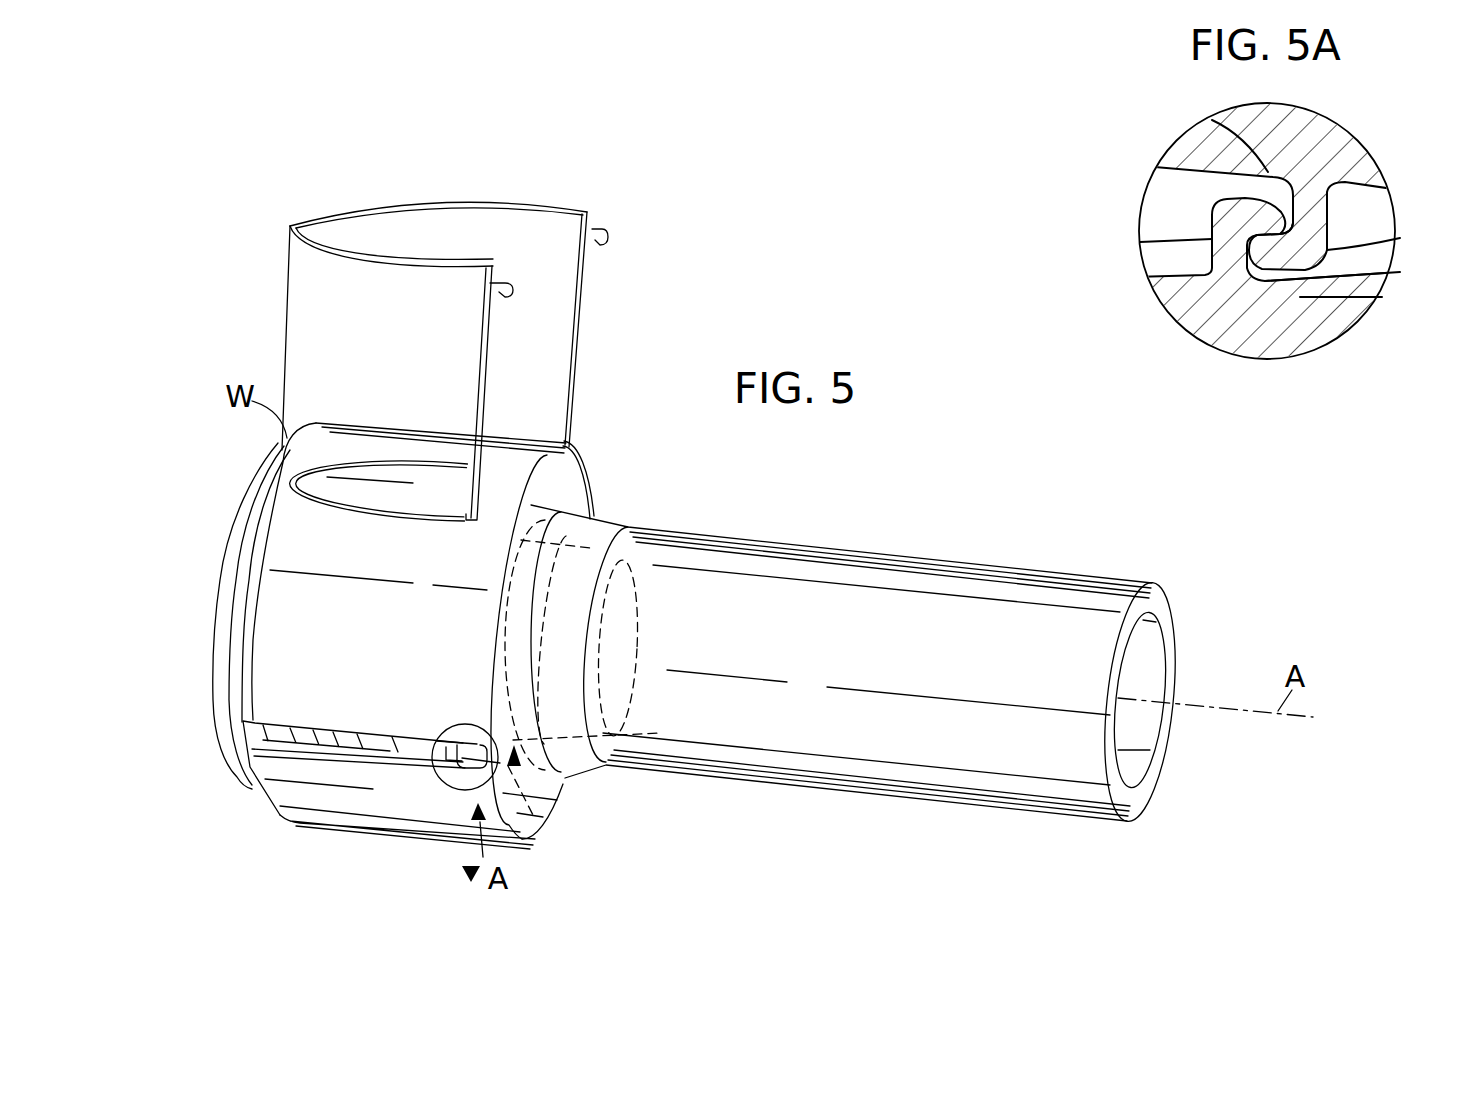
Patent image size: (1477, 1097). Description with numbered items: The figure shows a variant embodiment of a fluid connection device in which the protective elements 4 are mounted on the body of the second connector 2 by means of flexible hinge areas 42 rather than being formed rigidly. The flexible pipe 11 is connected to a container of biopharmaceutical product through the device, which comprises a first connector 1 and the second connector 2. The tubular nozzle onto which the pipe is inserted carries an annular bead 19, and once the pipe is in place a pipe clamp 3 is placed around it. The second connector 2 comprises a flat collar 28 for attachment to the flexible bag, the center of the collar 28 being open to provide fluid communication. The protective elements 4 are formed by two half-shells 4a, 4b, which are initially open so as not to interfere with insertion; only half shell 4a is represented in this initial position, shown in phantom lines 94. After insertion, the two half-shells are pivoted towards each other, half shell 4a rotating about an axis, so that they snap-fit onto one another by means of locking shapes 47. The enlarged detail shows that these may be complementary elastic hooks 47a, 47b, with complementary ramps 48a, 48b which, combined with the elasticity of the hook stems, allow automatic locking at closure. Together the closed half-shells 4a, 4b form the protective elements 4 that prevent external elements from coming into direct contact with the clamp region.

In FIG. 5, the first connector 1 is at (537, 817).
In FIG. 5, the second connector 2 is at (193, 595).
In FIG. 5, the pipe clamp 3 is at (412, 748).
In FIG. 5, the protective elements 4 is at (604, 461).
In FIG. 5, the half shell 4a is at (383, 416).
In FIG. 5A, the half shell 4a is at (1340, 148).
In FIG. 5, the half shell 4b is at (323, 835).
In FIG. 5A, the half shell 4b is at (1322, 330).
In FIG. 5, the flexible pipe 11 is at (917, 532).
In FIG. 5, the annular bead 19 is at (590, 545).
In FIG. 5, the collar 28 is at (258, 466).
In FIG. 5, the flexible hinge areas 42 is at (252, 504).
In FIG. 5, the locking shapes 47 is at (460, 763).
In FIG. 5A, the elastic hook 47a is at (1362, 240).
In FIG. 5A, the elastic hook 47b is at (1228, 232).
In FIG. 5A, the ramp 48a is at (1368, 290).
In FIG. 5A, the ramp 48b is at (1212, 120).
In FIG. 5, the phantom lines 94 is at (590, 320).